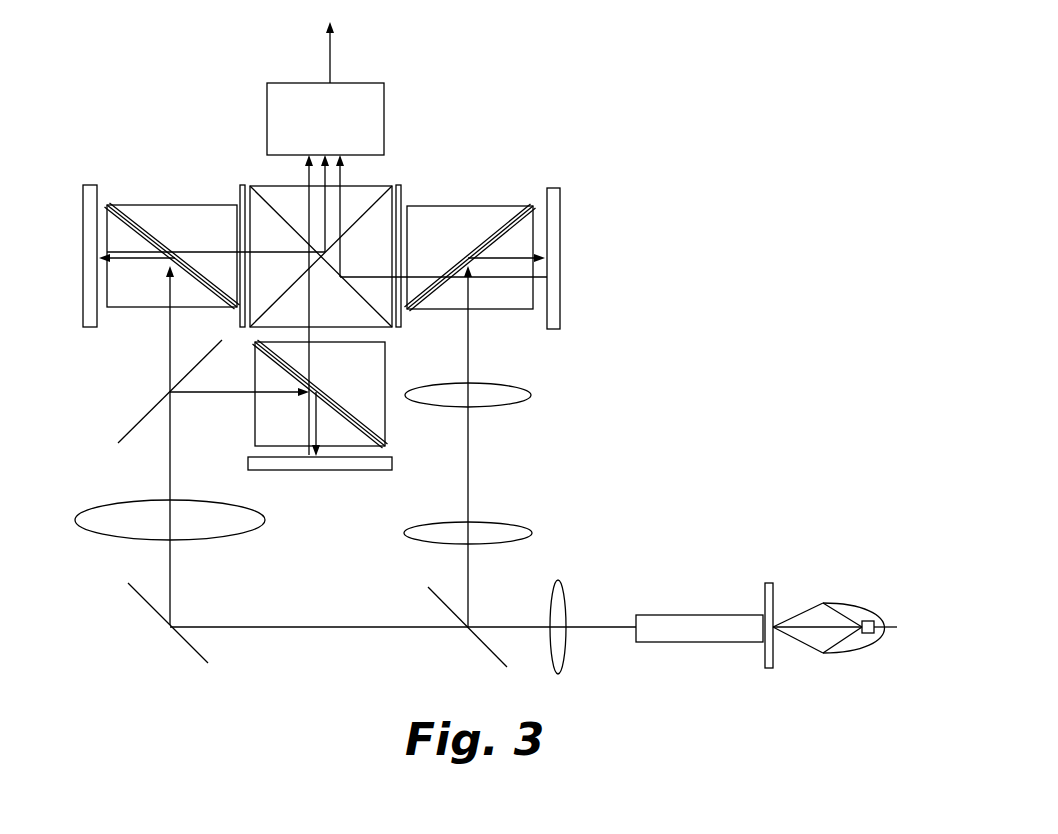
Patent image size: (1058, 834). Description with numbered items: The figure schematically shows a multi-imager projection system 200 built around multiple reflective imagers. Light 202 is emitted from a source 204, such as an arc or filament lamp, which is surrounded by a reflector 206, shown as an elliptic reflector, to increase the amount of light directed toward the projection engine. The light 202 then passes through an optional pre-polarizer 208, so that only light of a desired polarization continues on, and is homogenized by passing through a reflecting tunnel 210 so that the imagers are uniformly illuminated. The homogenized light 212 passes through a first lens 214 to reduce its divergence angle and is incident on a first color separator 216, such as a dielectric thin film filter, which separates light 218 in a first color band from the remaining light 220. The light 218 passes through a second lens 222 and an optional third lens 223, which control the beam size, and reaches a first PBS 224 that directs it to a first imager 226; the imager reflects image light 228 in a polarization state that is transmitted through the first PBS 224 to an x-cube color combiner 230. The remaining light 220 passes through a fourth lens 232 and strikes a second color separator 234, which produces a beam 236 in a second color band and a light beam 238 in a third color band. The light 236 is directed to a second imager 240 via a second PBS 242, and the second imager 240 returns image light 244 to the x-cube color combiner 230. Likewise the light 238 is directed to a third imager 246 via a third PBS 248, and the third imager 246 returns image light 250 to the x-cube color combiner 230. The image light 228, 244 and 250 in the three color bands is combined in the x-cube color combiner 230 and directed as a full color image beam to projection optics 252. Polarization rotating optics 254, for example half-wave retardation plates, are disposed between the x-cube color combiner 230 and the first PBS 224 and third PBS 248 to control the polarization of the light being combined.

The multi-imager projection system 200 is at (676, 221).
The light 202 is at (797, 609).
The source 204 is at (868, 621).
The reflector 206 is at (832, 655).
The pre-polarizer 208 is at (767, 583).
The reflecting tunnel 210 is at (688, 613).
The homogenized light 212 is at (602, 630).
The first lens 214 is at (562, 582).
The first color separator 216 is at (482, 643).
The light in first color band 218 is at (470, 591).
The remaining light 220 is at (362, 630).
The second lens 222 is at (508, 524).
The third lens 223 is at (522, 400).
The first PBS 224 is at (485, 206).
The first imager 226 is at (562, 258).
The image light in first color band 228 is at (502, 278).
The x-cube color combiner 230 is at (375, 186).
The fourth lens 232 is at (130, 539).
The second color separator 234 is at (142, 418).
The light in second color band 236 is at (218, 396).
The light in third color band 238 is at (167, 327).
The second imager 240 is at (330, 471).
The second PBS 242 is at (386, 421).
The image light in second color band 244 is at (310, 330).
The third imager 246 is at (83, 185).
The third PBS 248 is at (167, 204).
The image light in third color band 250 is at (220, 250).
The projection optics 252 is at (387, 95).
The polarization rotating optics 254 is at (243, 185).